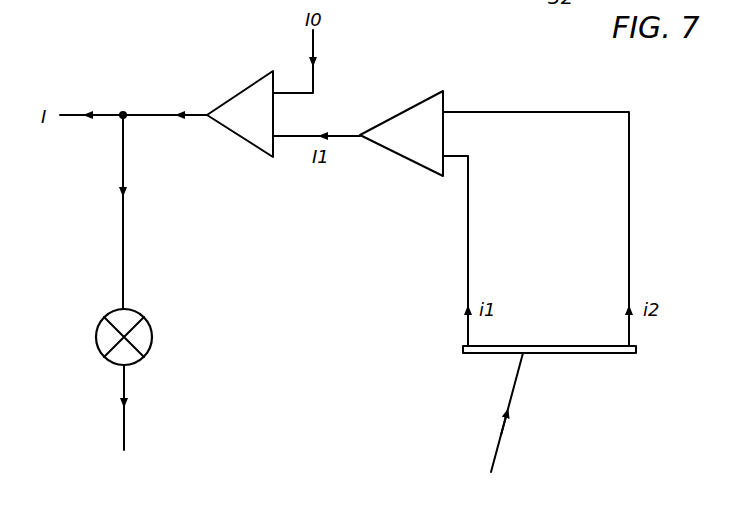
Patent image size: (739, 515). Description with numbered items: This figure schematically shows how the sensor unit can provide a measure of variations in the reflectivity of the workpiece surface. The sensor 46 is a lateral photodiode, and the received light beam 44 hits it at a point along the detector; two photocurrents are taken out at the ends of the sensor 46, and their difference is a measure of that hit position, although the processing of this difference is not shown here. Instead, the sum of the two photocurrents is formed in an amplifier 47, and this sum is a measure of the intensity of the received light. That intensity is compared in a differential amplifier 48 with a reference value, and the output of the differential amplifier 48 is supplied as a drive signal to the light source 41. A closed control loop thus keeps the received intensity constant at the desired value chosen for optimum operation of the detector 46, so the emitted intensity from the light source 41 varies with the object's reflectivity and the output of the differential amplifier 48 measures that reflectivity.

The light source 41 is at (145, 337).
The received light beam 44 is at (499, 452).
The sensor 46 is at (603, 356).
The amplifier 47 is at (410, 152).
The differential amplifier 48 is at (243, 130).